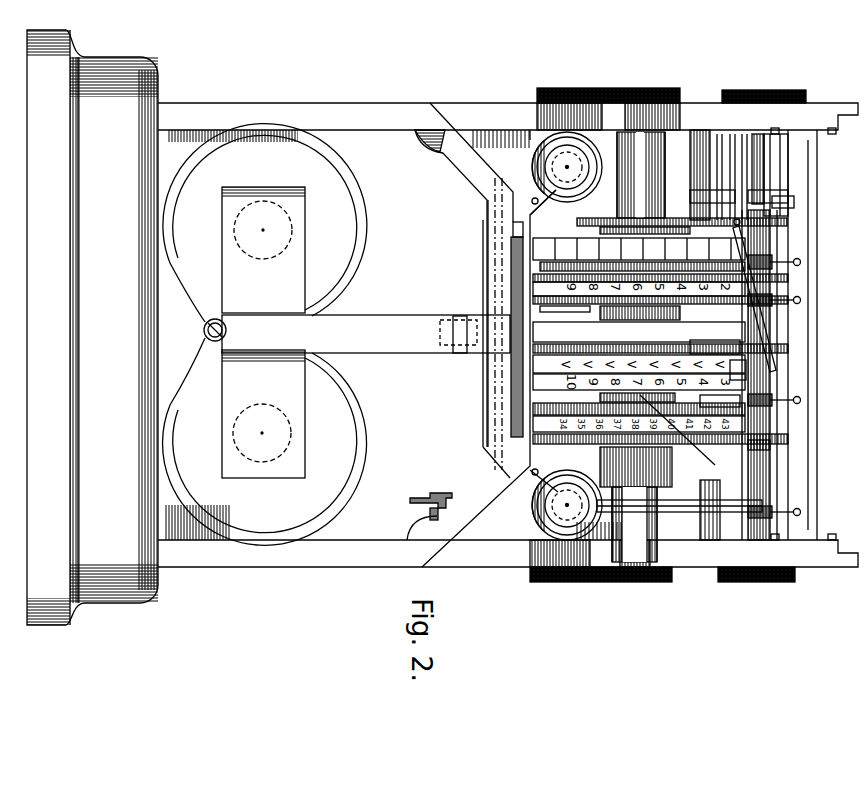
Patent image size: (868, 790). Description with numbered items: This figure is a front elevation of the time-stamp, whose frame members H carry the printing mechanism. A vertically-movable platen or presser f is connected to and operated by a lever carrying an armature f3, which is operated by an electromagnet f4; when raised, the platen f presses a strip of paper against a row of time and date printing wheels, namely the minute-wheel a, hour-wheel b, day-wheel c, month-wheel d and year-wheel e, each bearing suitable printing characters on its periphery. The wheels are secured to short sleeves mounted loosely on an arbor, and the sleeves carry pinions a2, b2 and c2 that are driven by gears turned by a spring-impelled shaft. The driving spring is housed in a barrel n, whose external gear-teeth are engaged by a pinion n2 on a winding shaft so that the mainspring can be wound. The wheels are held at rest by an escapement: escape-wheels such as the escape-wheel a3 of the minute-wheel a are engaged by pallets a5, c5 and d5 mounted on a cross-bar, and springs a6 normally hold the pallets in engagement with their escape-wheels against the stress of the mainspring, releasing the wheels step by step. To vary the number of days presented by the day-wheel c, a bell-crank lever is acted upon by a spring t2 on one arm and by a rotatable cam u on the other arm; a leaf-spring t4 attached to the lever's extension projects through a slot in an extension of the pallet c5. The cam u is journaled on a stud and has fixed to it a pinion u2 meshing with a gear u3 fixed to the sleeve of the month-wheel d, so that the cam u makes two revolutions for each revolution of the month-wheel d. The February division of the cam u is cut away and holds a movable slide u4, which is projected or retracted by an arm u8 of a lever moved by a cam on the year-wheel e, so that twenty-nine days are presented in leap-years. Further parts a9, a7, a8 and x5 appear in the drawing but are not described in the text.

The upper frame beam H is at (452, 103).
The armature f3 is at (265, 220).
The electromagnet f4 is at (360, 440).
The platen f is at (455, 372).
The minute-wheel a is at (530, 426).
The hour-wheel b is at (530, 378).
The day-wheel c is at (530, 322).
The month-wheel d is at (530, 290).
The year-wheel e is at (530, 258).
The stop bracket a9 is at (438, 500).
The pinion c2 is at (639, 323).
The barrel n is at (658, 208).
The pinion n2 is at (660, 239).
The cam u is at (735, 103).
The pinion u2 is at (828, 236).
The gear u3 is at (665, 205).
The slide u4 is at (698, 105).
The arm u8 is at (782, 185).
The pinion a2 is at (602, 309).
The escape-wheel a3 is at (575, 440).
The pallet a5 is at (780, 450).
The spring a6 is at (800, 303).
The rod a7 is at (790, 310).
The column a8 is at (797, 512).
The pinion b2 is at (700, 480).
The pallet c5 is at (795, 330).
The pallet d5 is at (790, 270).
The spring t2 is at (773, 368).
The leaf-spring t4 is at (750, 370).
The shaft x5 is at (800, 300).